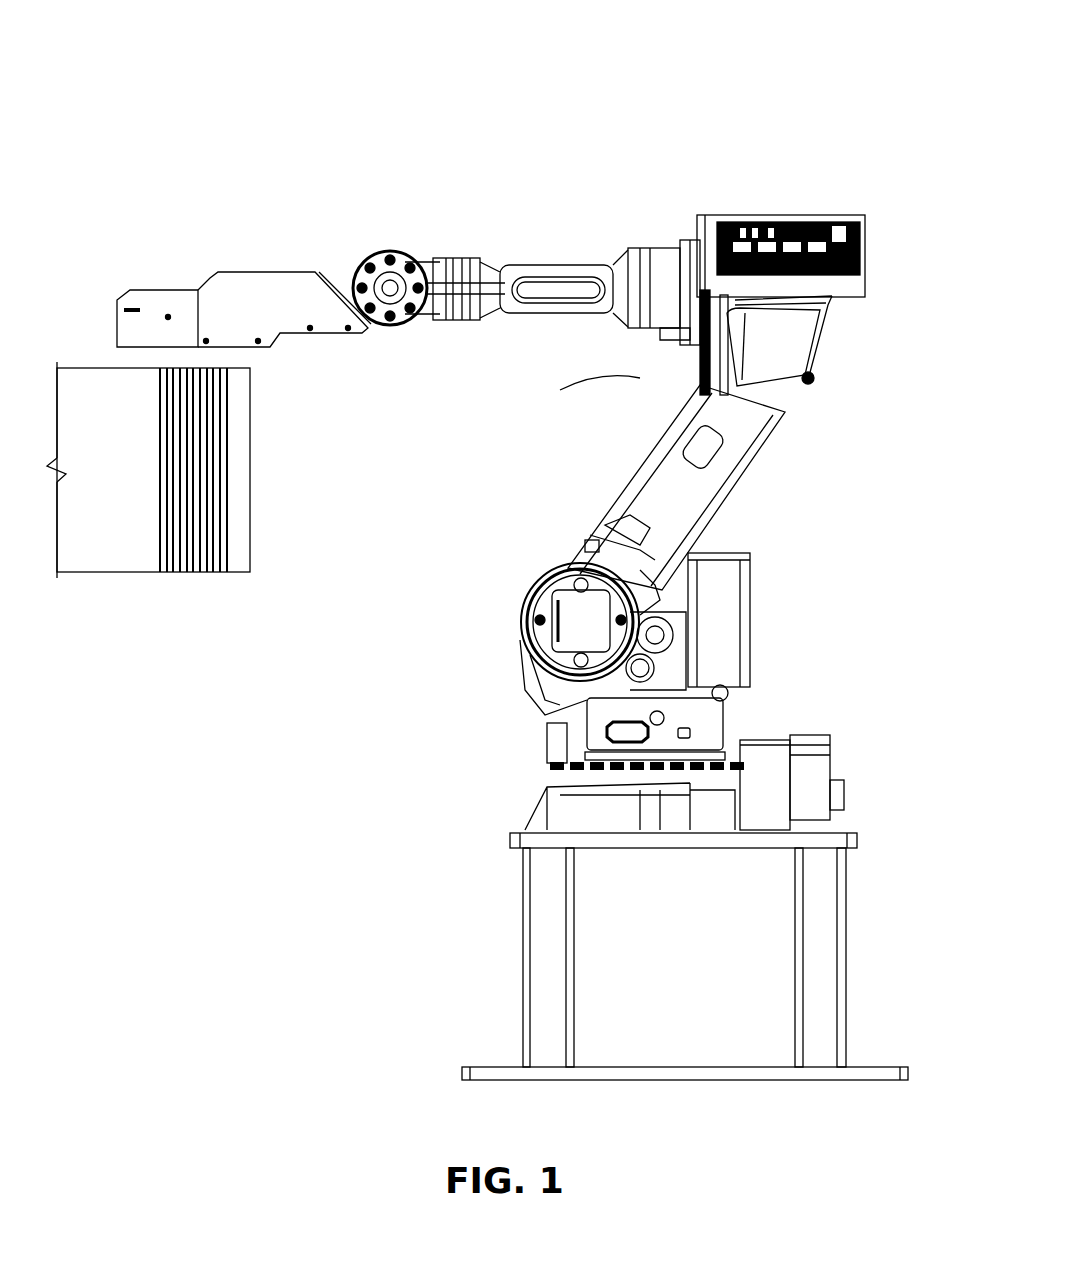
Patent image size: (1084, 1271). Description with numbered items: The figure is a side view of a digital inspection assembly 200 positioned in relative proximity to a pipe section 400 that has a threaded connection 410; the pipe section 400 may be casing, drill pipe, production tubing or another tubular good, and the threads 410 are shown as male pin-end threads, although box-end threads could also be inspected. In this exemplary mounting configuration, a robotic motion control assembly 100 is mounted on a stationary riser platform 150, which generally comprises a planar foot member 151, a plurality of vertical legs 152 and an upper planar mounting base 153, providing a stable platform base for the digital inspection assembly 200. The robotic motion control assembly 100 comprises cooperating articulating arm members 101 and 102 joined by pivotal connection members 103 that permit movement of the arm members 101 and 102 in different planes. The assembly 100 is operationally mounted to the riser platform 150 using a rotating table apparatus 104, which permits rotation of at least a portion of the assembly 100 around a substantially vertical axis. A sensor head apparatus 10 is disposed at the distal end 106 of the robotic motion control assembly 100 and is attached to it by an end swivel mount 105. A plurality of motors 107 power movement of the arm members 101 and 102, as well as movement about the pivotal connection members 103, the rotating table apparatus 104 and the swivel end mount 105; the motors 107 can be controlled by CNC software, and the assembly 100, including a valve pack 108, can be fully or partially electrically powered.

The sensor head apparatus 10 is at (235, 280).
The robotic motion control assembly 100 is at (752, 466).
The articulating arm member 101 is at (555, 267).
The articulating arm member 102 is at (675, 505).
The pivotal connection members 103 is at (800, 342).
The rotating table apparatus 104 is at (643, 763).
The end swivel mount 105 is at (392, 275).
The distal end 106 is at (465, 262).
The motors 107 is at (728, 350).
The valve pack 108 is at (760, 222).
The stationary riser platform 150 is at (512, 940).
The planar foot member 151 is at (870, 1073).
The vertical legs 152 is at (553, 1017).
The upper planar mounting base 153 is at (835, 845).
The digital inspection assembly 200 is at (650, 190).
The pipe section 400 is at (148, 507).
The threaded connection 410 is at (207, 560).